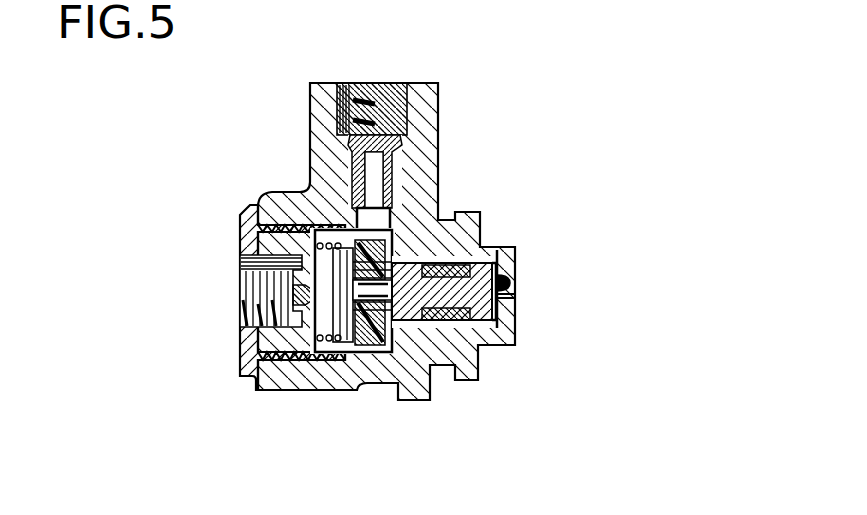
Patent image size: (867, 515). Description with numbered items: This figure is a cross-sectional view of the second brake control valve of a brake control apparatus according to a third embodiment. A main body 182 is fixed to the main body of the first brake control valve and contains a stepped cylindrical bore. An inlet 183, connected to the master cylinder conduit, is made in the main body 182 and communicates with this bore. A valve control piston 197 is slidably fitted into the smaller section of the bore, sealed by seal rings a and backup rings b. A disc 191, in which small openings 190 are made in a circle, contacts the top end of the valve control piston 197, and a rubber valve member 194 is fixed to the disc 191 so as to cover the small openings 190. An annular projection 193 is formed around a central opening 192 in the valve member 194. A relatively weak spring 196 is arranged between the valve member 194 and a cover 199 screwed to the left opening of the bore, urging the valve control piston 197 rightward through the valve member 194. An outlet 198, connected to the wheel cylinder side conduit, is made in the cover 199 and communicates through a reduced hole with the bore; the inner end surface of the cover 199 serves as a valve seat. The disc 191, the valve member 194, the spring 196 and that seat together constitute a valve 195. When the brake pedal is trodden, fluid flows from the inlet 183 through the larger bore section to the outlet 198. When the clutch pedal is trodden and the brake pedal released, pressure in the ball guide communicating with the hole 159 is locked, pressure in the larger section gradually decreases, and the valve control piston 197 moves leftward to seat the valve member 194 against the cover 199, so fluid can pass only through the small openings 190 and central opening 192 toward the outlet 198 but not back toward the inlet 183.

The main body 182 is at (420, 125).
The inlet 183 is at (383, 83).
The small openings 190 is at (375, 272).
The disc 191 is at (453, 377).
The central opening 192 is at (292, 390).
The annular projection 193 is at (338, 343).
The valve member 194 is at (368, 343).
The valve 195 is at (352, 288).
The spring 196 is at (337, 232).
The valve control piston 197 is at (505, 296).
The outlet 198 is at (238, 280).
The cover 199 is at (240, 238).
The hole 159 is at (470, 297).
The seal rings a is at (257, 212).
The backup rings b is at (427, 270).